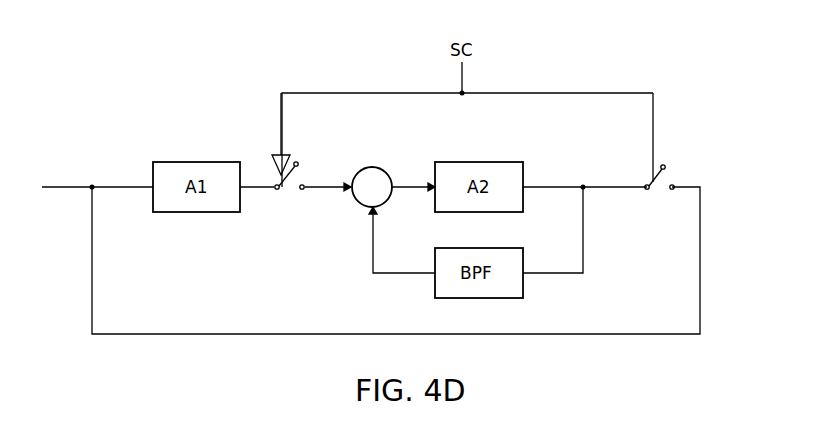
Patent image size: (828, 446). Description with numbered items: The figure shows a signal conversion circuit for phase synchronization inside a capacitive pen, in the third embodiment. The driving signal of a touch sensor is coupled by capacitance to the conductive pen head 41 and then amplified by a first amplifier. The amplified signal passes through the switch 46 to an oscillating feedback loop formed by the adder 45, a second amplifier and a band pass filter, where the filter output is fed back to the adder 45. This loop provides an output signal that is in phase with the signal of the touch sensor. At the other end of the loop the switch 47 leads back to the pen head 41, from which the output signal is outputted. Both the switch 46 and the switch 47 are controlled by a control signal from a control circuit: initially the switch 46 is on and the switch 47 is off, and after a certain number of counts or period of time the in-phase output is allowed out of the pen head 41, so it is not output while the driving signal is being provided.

The conductive pen head 41 is at (356, 255).
The adder 45 is at (380, 160).
The switch 46 is at (290, 183).
The switch 47 is at (655, 180).